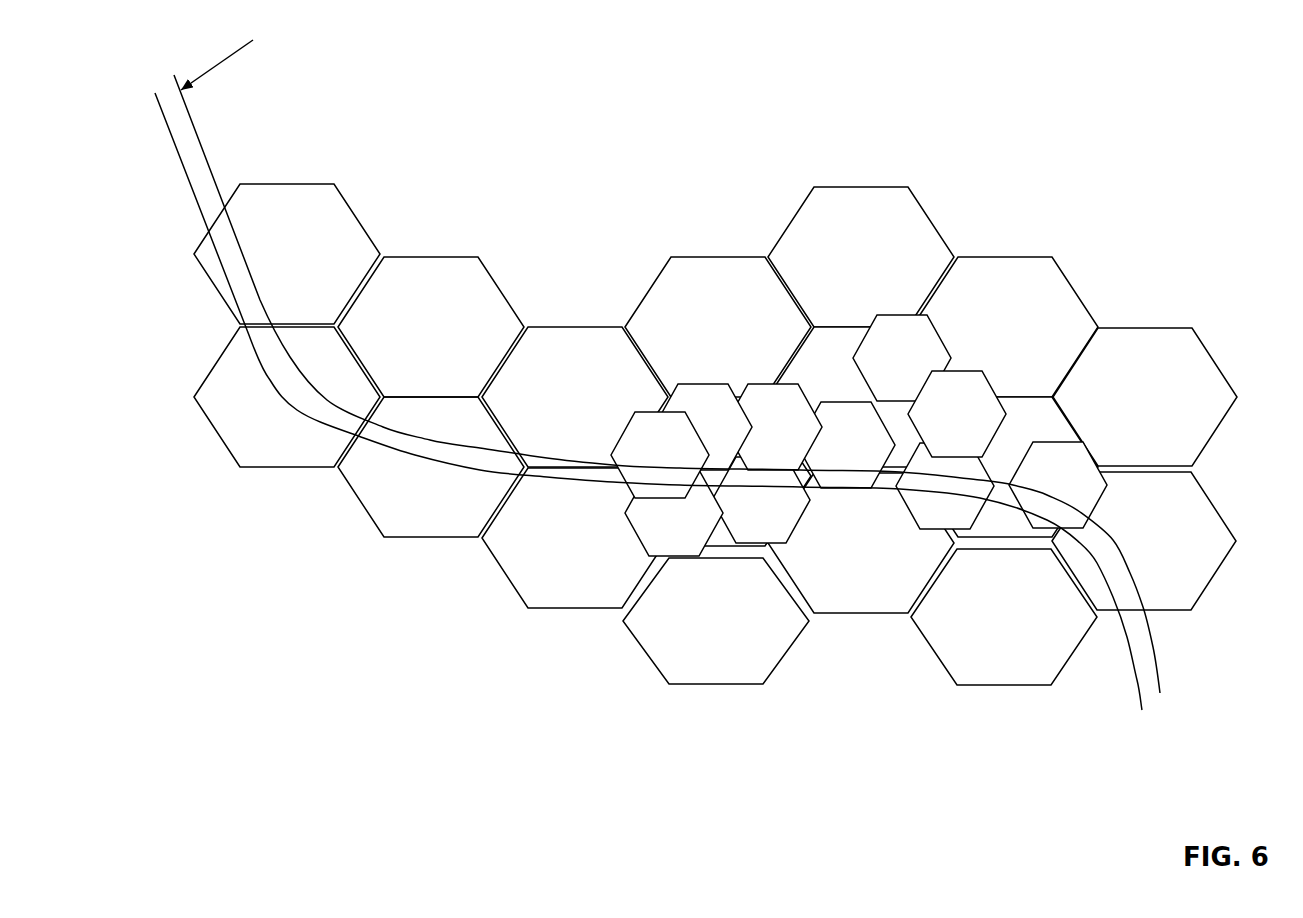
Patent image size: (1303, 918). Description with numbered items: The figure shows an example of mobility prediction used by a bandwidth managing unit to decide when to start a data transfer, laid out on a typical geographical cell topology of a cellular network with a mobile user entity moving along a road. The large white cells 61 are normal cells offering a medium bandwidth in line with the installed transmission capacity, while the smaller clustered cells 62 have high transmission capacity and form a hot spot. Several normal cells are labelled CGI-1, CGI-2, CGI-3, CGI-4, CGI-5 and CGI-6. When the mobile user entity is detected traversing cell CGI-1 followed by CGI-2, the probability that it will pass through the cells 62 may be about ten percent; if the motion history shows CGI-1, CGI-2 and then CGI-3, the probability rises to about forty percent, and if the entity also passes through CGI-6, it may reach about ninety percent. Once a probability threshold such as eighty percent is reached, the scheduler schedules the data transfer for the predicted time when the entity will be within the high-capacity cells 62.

The white cells 61 is at (501, 520).
The cells with high transmission capacity 62 is at (962, 417).
The cell CGI1 CGI-1 is at (287, 254).
The cell CGI2 CGI-2 is at (287, 397).
The cell CGI3 CGI-3 is at (431, 467).
The cell CGI4 CGI-4 is at (431, 327).
The cell CGI5 CGI-5 is at (575, 538).
The cell CGI6 CGI-6 is at (575, 397).